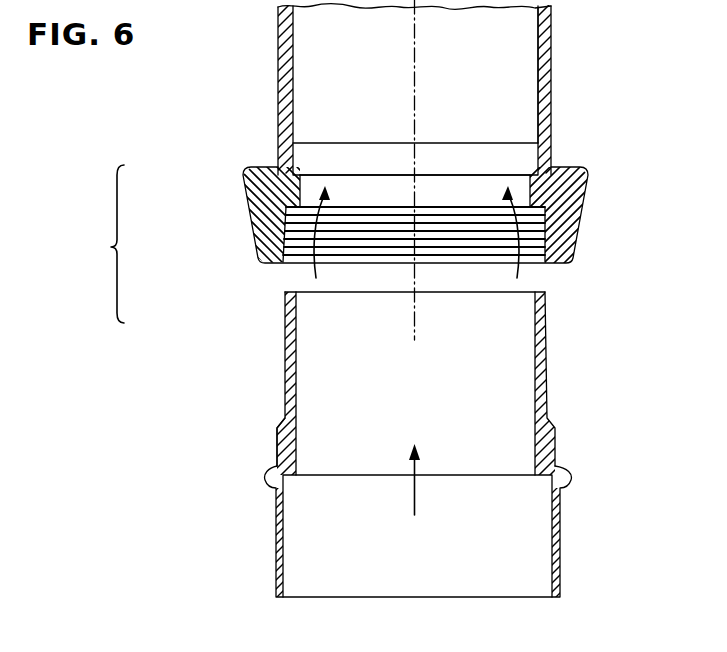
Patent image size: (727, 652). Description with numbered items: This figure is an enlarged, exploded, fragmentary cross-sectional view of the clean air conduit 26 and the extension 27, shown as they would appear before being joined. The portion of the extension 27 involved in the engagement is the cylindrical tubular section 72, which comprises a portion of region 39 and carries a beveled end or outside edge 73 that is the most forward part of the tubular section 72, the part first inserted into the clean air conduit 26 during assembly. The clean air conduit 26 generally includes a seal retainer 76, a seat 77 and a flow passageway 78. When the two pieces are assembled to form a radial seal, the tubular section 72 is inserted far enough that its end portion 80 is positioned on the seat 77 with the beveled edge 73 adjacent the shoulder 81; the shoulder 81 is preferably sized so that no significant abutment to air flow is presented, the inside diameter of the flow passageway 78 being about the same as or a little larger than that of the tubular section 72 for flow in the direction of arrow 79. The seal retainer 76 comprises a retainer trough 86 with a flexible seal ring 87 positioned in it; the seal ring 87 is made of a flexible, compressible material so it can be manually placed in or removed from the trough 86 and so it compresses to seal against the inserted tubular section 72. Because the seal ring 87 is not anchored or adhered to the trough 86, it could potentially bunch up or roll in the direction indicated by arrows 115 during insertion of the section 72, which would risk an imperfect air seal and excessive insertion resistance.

The clean air conduit 26 is at (553, 78).
The extension 27 is at (548, 382).
The region 39 is at (285, 382).
The cylindrical tubular section 72 is at (548, 338).
The beveled end 73 is at (548, 296).
The seal retainer 76 is at (420, 248).
The seat 77 is at (540, 156).
The flow passageway 78 is at (538, 53).
The arrow 79 is at (419, 490).
The end portion 80 is at (370, 280).
The shoulder 81 is at (378, 146).
The retainer trough 86 is at (245, 216).
The flexible seal ring 87 is at (266, 232).
The arrows 115 is at (340, 226).